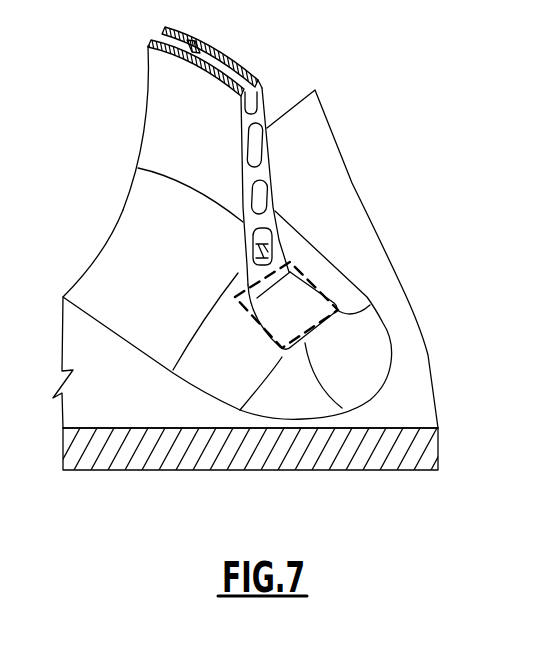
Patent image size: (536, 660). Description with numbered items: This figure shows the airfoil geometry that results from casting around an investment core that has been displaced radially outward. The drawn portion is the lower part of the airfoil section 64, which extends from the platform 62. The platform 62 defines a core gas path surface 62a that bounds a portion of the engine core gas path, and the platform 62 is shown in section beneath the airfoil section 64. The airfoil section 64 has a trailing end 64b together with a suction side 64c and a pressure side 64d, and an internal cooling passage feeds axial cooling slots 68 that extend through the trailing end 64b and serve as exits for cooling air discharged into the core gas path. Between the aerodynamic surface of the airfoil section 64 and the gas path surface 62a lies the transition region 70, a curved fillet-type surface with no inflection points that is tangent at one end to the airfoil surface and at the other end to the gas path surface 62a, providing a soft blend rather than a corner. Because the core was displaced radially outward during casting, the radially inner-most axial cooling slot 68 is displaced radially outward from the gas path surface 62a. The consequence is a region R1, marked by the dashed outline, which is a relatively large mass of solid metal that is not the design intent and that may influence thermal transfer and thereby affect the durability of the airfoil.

The platform 62 is at (310, 450).
The core gas path surface 62a is at (383, 410).
The airfoil section 64 is at (212, 179).
The trailing end 64b is at (265, 113).
The suction side 64c is at (168, 71).
The pressure side 64d is at (227, 63).
The axial cooling slot 68 is at (282, 222).
The transition region 70 is at (147, 280).
The region R1 is at (320, 287).